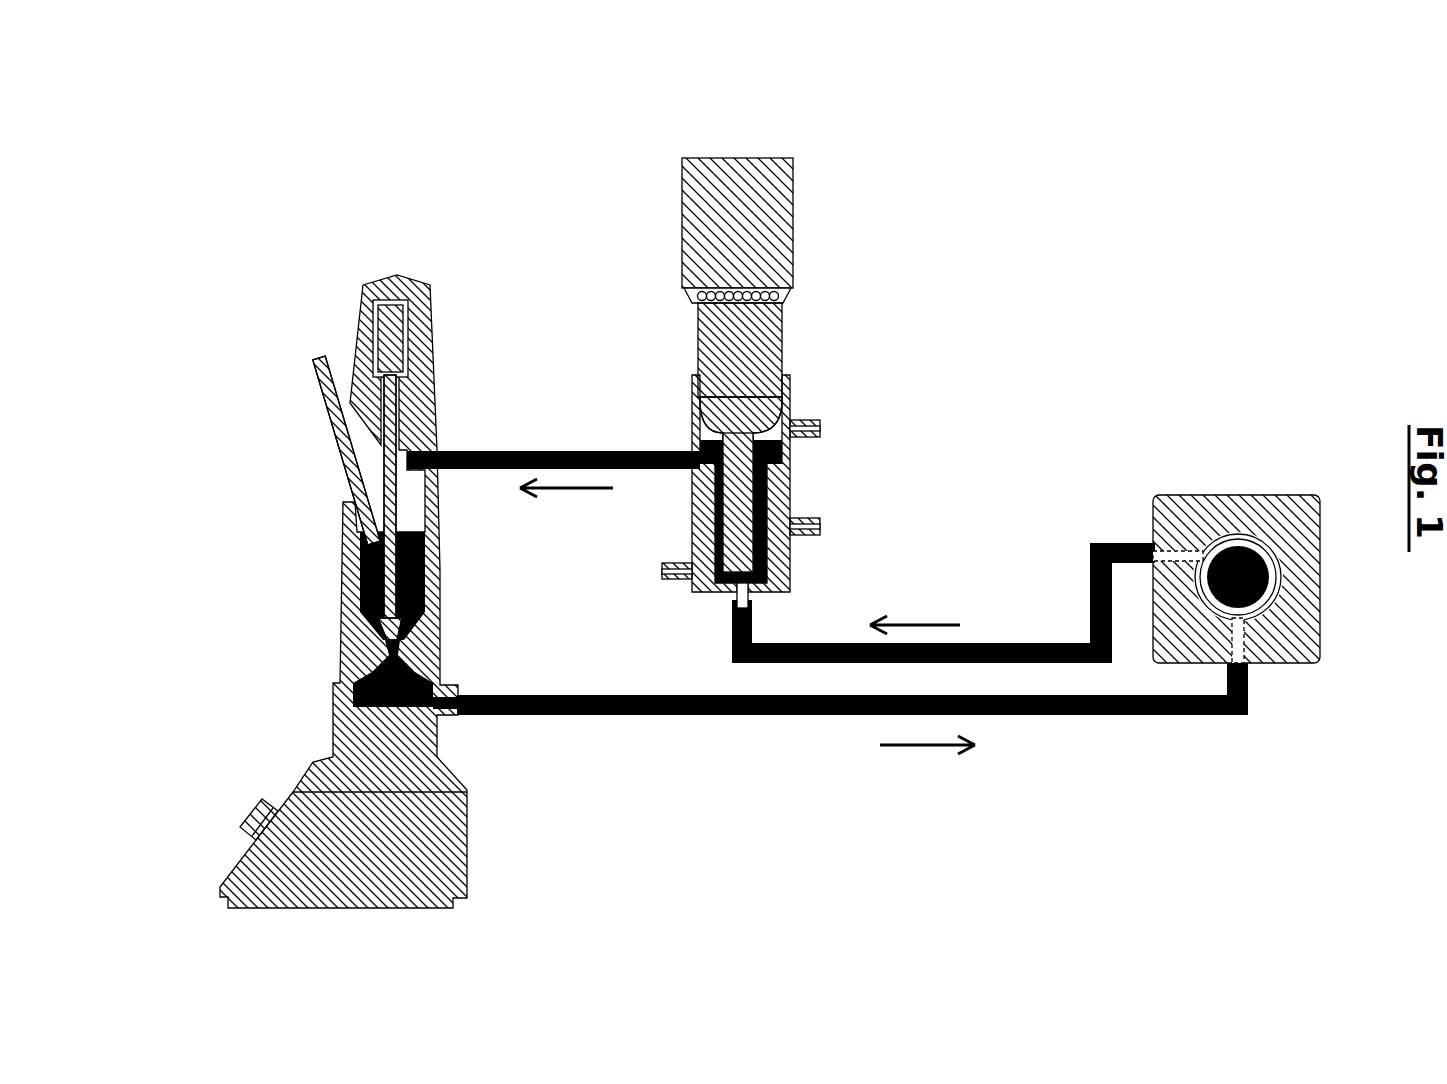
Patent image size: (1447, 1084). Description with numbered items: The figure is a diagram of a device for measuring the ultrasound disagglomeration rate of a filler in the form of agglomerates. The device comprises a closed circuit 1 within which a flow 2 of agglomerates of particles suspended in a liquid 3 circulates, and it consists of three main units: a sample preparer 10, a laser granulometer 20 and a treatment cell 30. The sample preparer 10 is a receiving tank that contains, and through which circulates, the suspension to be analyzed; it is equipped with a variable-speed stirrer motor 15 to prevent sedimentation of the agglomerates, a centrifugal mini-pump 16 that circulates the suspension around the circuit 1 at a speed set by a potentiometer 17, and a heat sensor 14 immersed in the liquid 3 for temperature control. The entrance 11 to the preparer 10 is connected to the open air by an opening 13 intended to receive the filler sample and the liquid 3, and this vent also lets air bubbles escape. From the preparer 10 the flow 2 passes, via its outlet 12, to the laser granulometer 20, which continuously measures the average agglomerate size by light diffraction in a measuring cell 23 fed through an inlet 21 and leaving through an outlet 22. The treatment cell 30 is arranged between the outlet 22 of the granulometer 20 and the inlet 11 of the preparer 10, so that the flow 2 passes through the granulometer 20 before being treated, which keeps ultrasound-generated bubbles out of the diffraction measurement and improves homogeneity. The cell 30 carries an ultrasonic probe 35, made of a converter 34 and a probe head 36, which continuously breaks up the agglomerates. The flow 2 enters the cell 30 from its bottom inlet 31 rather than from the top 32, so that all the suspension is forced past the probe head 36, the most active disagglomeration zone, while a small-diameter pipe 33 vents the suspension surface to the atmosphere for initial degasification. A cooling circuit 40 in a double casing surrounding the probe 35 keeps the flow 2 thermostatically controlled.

The closed circuit 1 is at (1170, 252).
The flow 2 is at (560, 450).
The liquid 3 is at (427, 580).
The sample preparer 10 is at (319, 556).
The entrance 11 is at (440, 450).
The outlet 12 is at (459, 697).
The opening 13 is at (367, 458).
The heat sensor 14 is at (317, 362).
The stirrer motor 15 is at (385, 332).
The centrifugal mini-pump 16 is at (333, 662).
The potentiometer 17 is at (252, 818).
The laser granulometer 20 is at (1225, 575).
The pump outlet passage 21 is at (1247, 670).
The outlet 22 is at (1148, 547).
The measuring cell 23 is at (1270, 578).
The treatment cell 30 is at (768, 405).
The inlet 31 is at (732, 600).
The top 32 is at (682, 448).
The pipe 33 is at (818, 425).
The converter 34 is at (696, 228).
The ultrasonic probe 35 is at (712, 373).
The probe head 36 is at (773, 550).
The cooling circuit 40 is at (818, 530).